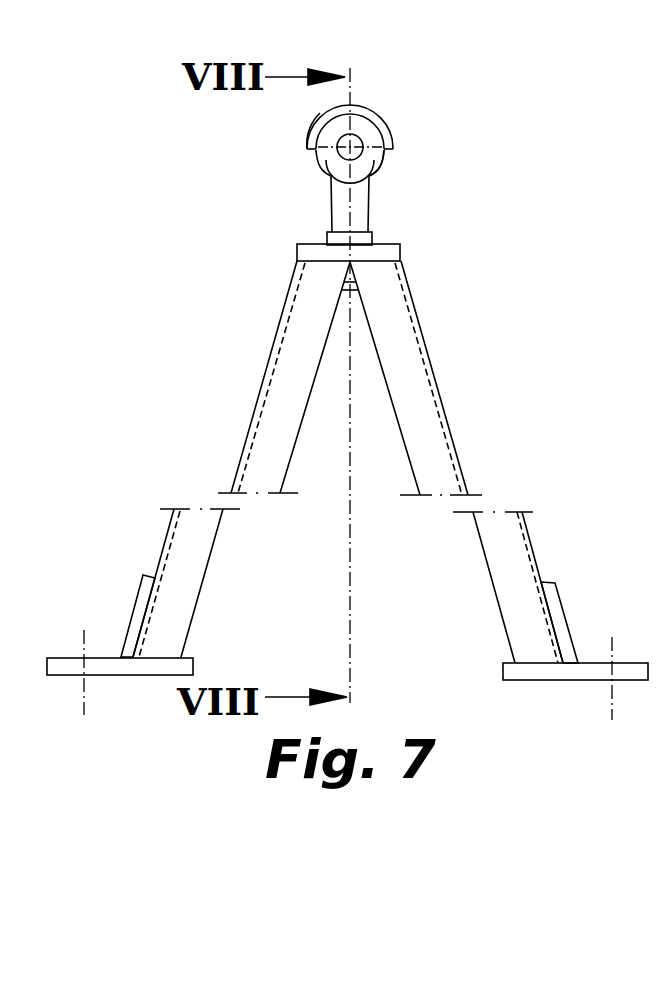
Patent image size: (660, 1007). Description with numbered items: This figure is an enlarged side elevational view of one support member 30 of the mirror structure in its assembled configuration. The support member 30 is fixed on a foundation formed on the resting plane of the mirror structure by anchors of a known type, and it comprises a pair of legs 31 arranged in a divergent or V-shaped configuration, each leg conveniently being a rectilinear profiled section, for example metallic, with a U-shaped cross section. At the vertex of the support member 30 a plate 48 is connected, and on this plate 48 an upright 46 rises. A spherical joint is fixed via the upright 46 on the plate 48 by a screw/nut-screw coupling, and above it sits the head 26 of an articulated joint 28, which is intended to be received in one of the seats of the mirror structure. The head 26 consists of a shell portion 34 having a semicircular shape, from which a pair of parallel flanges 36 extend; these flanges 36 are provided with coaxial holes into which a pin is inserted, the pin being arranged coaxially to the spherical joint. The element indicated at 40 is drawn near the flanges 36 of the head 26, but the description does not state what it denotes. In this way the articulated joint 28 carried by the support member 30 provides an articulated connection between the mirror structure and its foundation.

The head 26 is at (383, 109).
The articulated joint 28 is at (410, 148).
The support member 30 is at (462, 430).
The legs 31 is at (190, 541).
The shell portion 34 is at (316, 134).
The parallel flanges 36 is at (327, 153).
The pivot body portion 40 is at (357, 153).
The upright 46 is at (362, 218).
The plate 48 is at (303, 252).